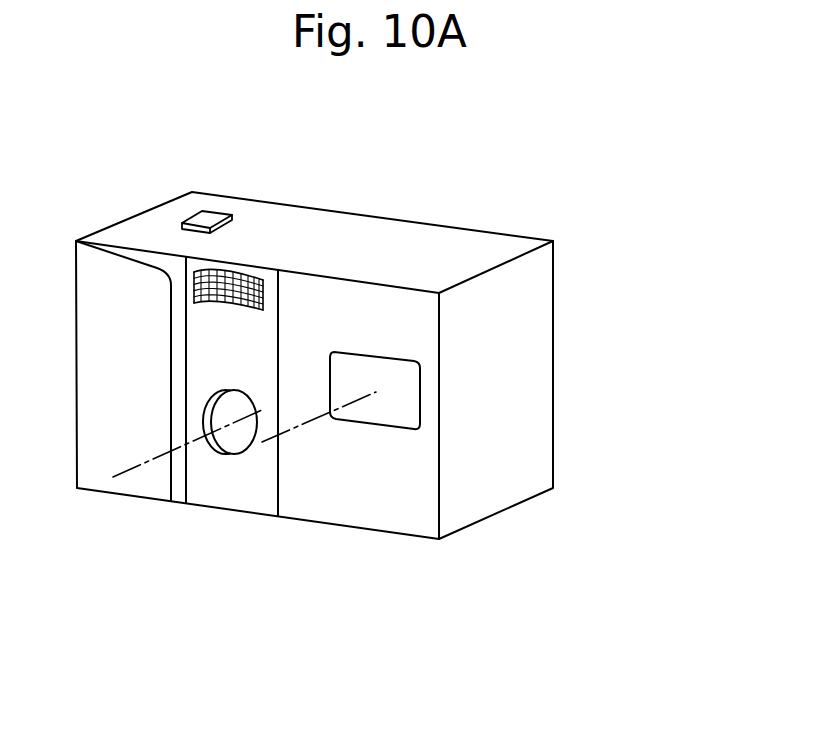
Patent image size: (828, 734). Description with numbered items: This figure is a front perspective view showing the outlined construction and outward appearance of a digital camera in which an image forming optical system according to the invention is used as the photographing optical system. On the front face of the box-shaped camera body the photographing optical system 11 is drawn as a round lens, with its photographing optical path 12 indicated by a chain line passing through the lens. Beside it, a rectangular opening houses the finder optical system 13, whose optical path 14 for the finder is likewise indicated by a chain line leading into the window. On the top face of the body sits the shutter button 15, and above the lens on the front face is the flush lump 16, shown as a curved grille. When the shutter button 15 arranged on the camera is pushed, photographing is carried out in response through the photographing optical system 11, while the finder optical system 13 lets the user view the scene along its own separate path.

The photographing optical system 11 is at (242, 437).
The photographing optical path 12 is at (160, 455).
The finder optical system 13 is at (398, 398).
The optical path for finder 14 is at (307, 420).
The shutter button 15 is at (207, 216).
The flush lump 16 is at (223, 272).